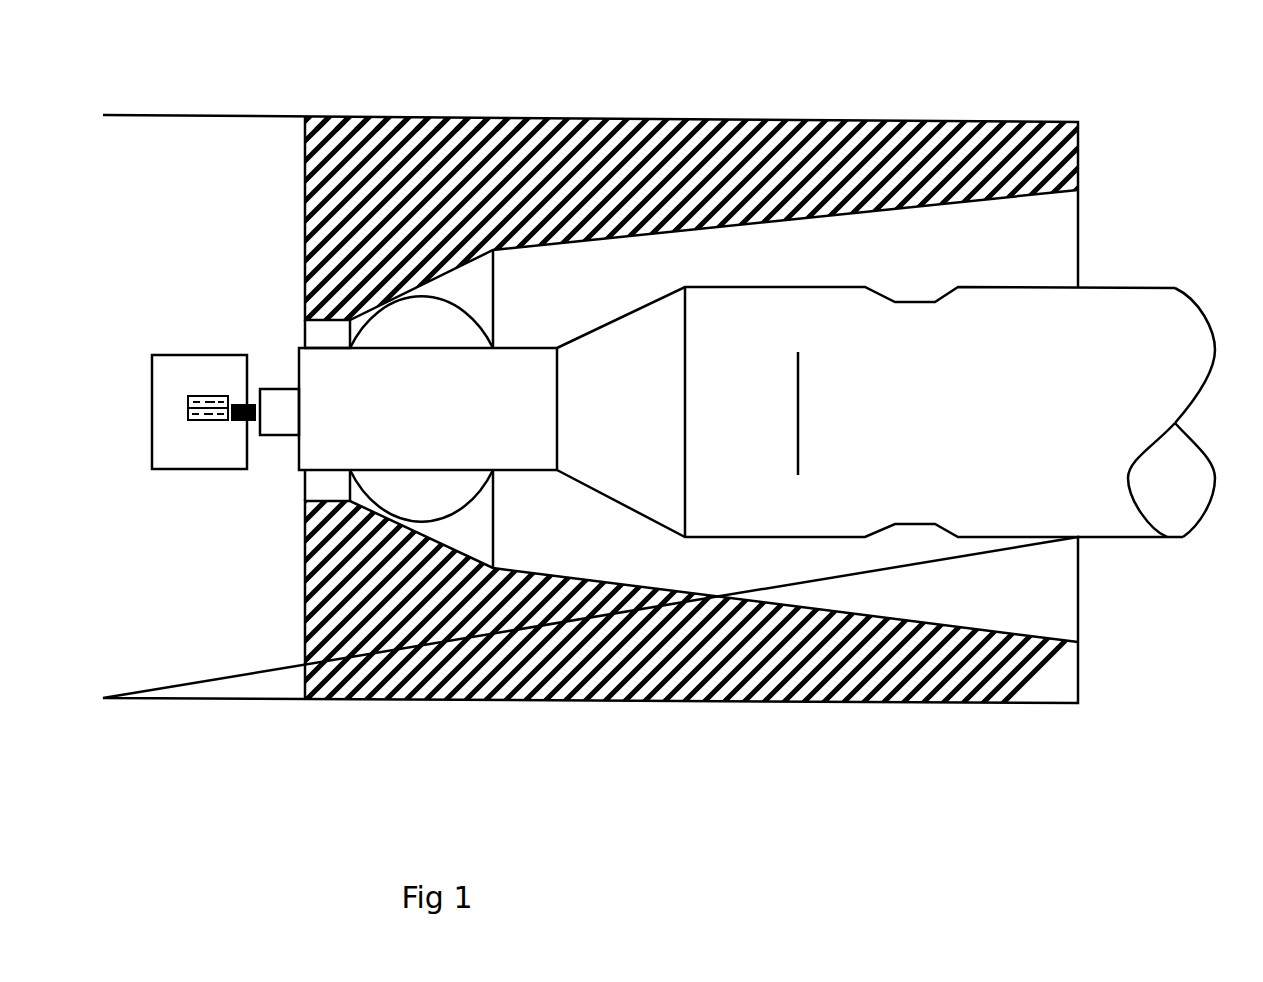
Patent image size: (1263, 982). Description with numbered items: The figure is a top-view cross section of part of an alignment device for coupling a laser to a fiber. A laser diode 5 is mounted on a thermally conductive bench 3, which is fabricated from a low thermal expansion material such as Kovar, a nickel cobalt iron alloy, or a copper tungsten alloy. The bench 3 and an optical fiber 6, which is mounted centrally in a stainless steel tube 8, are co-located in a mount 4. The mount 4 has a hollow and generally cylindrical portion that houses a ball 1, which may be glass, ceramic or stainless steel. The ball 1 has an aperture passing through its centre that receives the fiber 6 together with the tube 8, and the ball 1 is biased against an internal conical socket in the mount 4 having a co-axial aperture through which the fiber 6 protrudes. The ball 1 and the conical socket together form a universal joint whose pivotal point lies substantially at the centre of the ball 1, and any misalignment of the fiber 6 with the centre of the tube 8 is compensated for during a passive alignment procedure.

The ball 1 is at (420, 343).
The thermally conductive bench 3 is at (167, 469).
The mount 4 is at (709, 676).
The laser diode 5 is at (203, 397).
The optical fiber 6 is at (247, 405).
The stainless steel tube 8 is at (1110, 508).